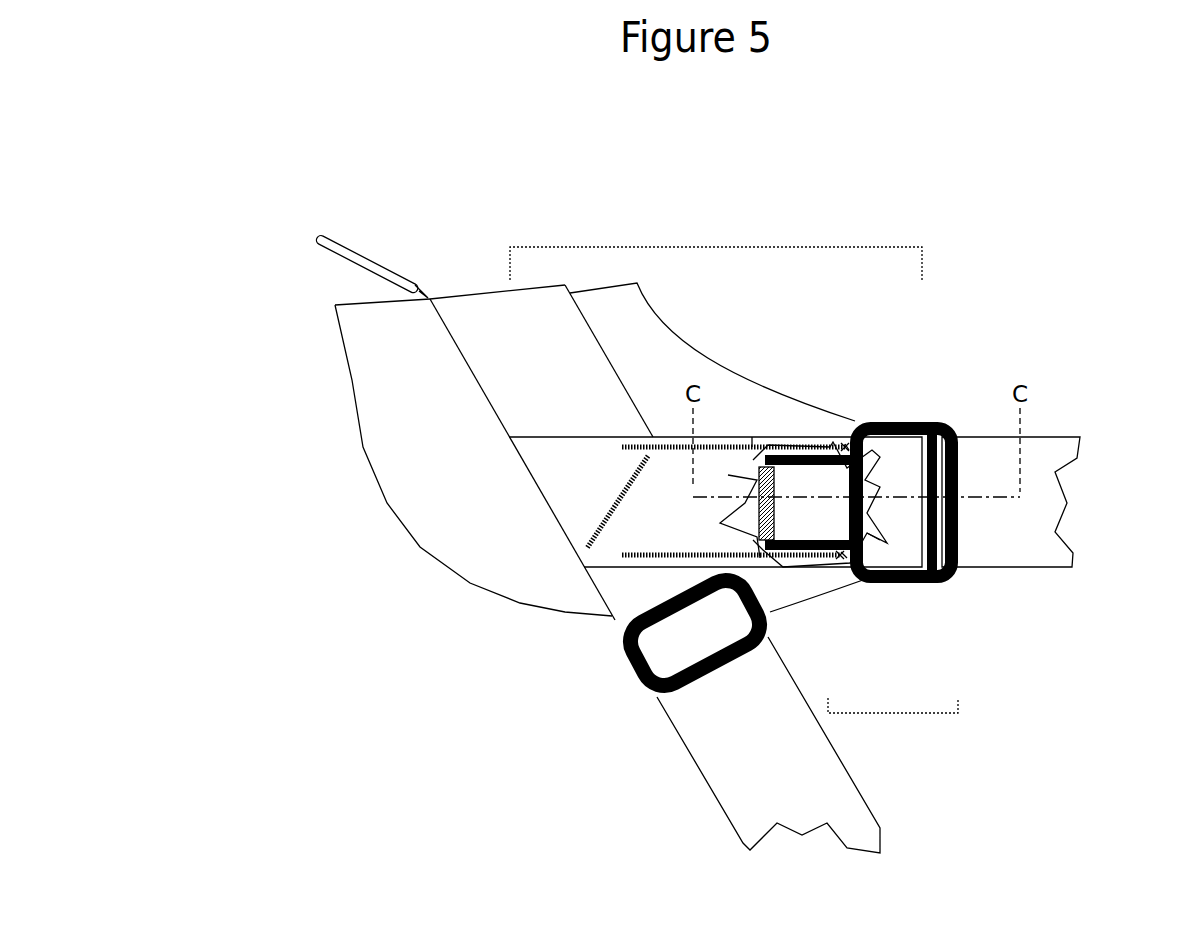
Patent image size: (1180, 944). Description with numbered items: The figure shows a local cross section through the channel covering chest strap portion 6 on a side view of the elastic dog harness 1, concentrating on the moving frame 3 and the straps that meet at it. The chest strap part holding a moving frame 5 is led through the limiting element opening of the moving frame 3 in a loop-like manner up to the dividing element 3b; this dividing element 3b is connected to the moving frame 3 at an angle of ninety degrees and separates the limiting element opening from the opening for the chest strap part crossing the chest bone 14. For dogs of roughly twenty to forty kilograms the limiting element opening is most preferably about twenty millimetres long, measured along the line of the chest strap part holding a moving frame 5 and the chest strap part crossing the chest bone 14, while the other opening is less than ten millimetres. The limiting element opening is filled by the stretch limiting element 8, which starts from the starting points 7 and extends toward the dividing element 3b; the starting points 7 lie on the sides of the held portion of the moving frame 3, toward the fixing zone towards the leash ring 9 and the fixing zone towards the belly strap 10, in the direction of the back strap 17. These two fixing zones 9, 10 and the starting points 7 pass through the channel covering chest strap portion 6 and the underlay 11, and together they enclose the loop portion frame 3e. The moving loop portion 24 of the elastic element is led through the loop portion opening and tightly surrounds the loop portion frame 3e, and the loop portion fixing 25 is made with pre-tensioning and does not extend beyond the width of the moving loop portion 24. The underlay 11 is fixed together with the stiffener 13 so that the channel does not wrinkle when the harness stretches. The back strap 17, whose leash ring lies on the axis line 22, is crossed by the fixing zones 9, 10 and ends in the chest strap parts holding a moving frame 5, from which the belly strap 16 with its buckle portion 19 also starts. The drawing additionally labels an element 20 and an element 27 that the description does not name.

The elastic dog harness 1 is at (500, 227).
The moving frame 3 is at (925, 582).
The dividing element 3b is at (947, 422).
The loop portion frame 3e is at (812, 443).
The chest strap part holding a moving frame 5 is at (717, 247).
The channel covering chest strap portion 6 is at (717, 443).
The starting points 7 is at (847, 445).
The stretch limiting element 8 is at (897, 713).
The fixing zone towards the leash ring 9 is at (752, 443).
The fixing zone towards the belly strap 10 is at (640, 572).
The underlay 11 is at (873, 540).
The stiffener 13 is at (415, 403).
The chest strap part crossing the chest bone 14 is at (1043, 488).
The belly strap 16 is at (760, 803).
The back strap 17 is at (512, 357).
The buckle portion 19 is at (633, 683).
The strap portion 20 is at (655, 305).
The axis line 22 is at (363, 267).
The moving loop portion 24 is at (772, 522).
The loop portion fixing 25 is at (757, 503).
The stitch line 27 is at (610, 505).